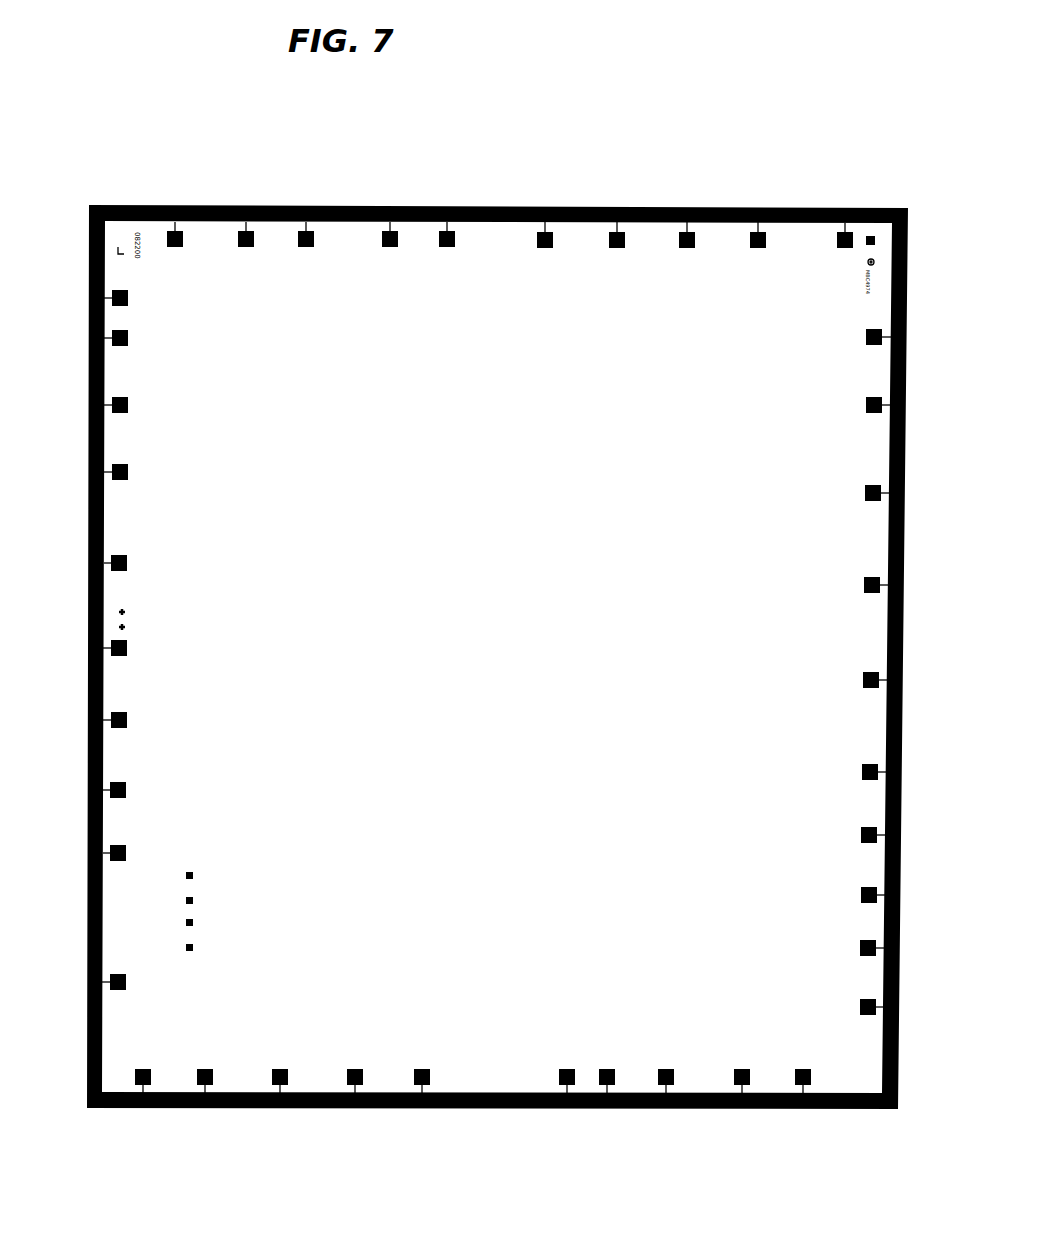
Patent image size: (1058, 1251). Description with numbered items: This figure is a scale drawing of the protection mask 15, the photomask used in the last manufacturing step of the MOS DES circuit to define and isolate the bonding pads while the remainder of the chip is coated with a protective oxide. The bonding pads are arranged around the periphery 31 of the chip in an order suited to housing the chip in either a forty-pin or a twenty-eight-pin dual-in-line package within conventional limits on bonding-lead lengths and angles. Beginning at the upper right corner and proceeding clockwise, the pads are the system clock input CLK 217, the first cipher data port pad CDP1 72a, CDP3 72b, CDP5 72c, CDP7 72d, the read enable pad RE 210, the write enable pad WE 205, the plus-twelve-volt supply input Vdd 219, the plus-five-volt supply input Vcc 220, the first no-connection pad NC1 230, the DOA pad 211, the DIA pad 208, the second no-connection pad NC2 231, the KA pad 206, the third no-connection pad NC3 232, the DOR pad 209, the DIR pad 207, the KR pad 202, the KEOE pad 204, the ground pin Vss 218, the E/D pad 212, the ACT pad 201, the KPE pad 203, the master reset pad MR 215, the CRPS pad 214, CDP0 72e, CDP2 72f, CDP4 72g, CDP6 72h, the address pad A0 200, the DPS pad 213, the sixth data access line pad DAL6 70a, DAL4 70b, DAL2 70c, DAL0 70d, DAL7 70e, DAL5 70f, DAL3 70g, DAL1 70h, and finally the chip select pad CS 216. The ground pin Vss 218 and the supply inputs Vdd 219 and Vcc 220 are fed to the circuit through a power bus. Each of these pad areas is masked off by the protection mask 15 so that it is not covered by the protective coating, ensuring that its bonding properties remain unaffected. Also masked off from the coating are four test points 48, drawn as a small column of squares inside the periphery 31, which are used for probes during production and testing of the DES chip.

The periphery of the chip 31 is at (912, 1097).
The protection mask 15 is at (905, 511).
The test points 48 is at (193, 876).
The DPS bonding pad 213 is at (188, 148).
The DAL6 bonding pad 70a is at (247, 206).
The DAL4 bonding pad 70b is at (311, 206).
The DAL2 bonding pad 70c is at (393, 206).
The DAL0 bonding pad 70d is at (451, 207).
The DAL7 bonding pad 70e is at (549, 207).
The DAL5 bonding pad 70f is at (624, 207).
The DAL3 bonding pad 70g is at (691, 207).
The DAL1 bonding pad 70h is at (763, 207).
The CS bonding pad 216 is at (862, 132).
The A0 bonding pad 200 is at (100, 290).
The CDP6 bonding pad 72h is at (100, 338).
The CDP4 bonding pad 72g is at (100, 405).
The CDP2 bonding pad 72f is at (100, 472).
The CDP0 bonding pad 72e is at (100, 563).
The CRPS bonding pad 214 is at (82, 595).
The MR bonding pad 215 is at (72, 677).
The KPE bonding pad 203 is at (80, 745).
The ACT bonding pad 201 is at (99, 853).
The E/D bonding pad 212 is at (53, 933).
The clock input 217 is at (907, 337).
The CDP1 bonding pad 72a is at (906, 405).
The CDP3 bonding pad 72b is at (906, 493).
The CDP5 bonding pad 72c is at (905, 585).
The CDP7 bonding pad 72d is at (904, 680).
The RE bonding pad 210 is at (935, 715).
The WE bonding pad 205 is at (936, 787).
The Vdd power supply input 219 is at (902, 895).
The Vcc power supply input 220 is at (901, 948).
The NC1 bonding pad 230 is at (901, 1007).
The Vss (GND) pin 218 is at (138, 1110).
The KEOE bonding pad 204 is at (205, 1110).
The KR bonding pad 202 is at (279, 1110).
The DIR bonding pad 207 is at (352, 1110).
The DOR bonding pad 209 is at (422, 1110).
The NC3 bonding pad 232 is at (567, 1110).
The KA bonding pad 206 is at (608, 1110).
The NC2 bonding pad 231 is at (665, 1110).
The DIA bonding pad 208 is at (741, 1110).
The DOA bonding pad 211 is at (803, 1110).